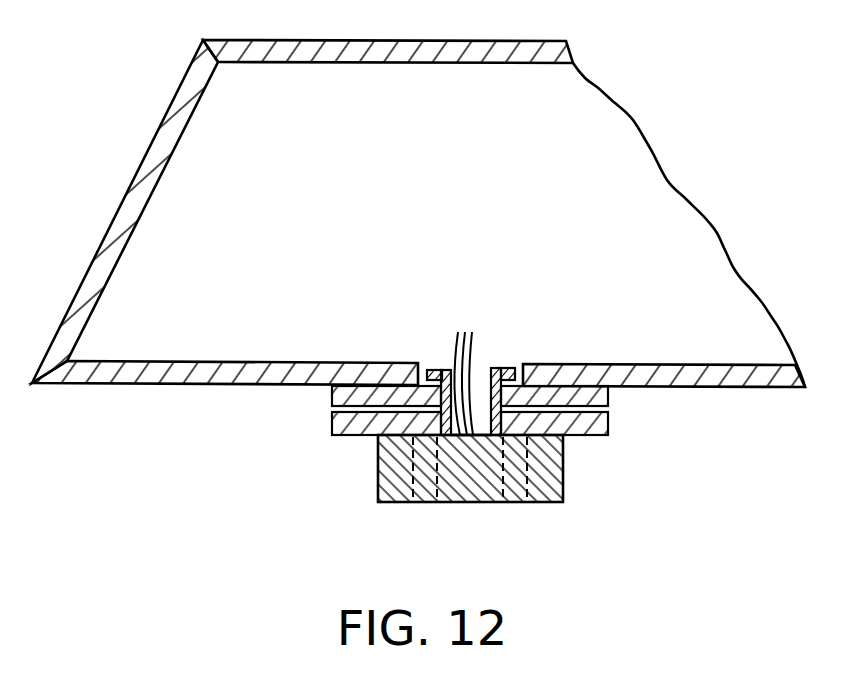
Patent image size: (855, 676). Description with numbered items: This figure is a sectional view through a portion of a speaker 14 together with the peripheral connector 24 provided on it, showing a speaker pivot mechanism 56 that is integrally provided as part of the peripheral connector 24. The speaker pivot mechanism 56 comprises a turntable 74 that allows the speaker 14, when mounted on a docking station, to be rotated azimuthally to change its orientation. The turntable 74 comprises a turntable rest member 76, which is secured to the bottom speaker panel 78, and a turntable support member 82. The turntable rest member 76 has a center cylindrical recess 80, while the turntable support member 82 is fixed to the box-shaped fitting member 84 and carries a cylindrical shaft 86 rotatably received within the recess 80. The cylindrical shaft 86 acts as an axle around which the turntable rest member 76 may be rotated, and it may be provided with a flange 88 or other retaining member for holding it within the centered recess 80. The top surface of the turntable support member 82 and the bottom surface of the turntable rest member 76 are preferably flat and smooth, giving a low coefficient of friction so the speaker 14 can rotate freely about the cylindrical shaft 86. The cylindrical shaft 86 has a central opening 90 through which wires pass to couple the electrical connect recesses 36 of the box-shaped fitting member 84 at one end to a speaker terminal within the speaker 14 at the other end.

The speaker 14 is at (197, 155).
The peripheral connector 24 is at (324, 488).
The electrical connect recesses 36 is at (510, 492).
The speaker pivot mechanism 56 is at (628, 449).
The turntable 74 is at (626, 414).
The turntable rest member 76 is at (596, 398).
The bottom speaker panel 78 is at (657, 380).
The center cylindrical recess 80 is at (518, 369).
The turntable support member 82 is at (340, 422).
The box-shaped fitting member 84 is at (555, 480).
The cylindrical shaft 86 is at (487, 370).
The flange 88 is at (510, 369).
The central opening 90 is at (480, 361).